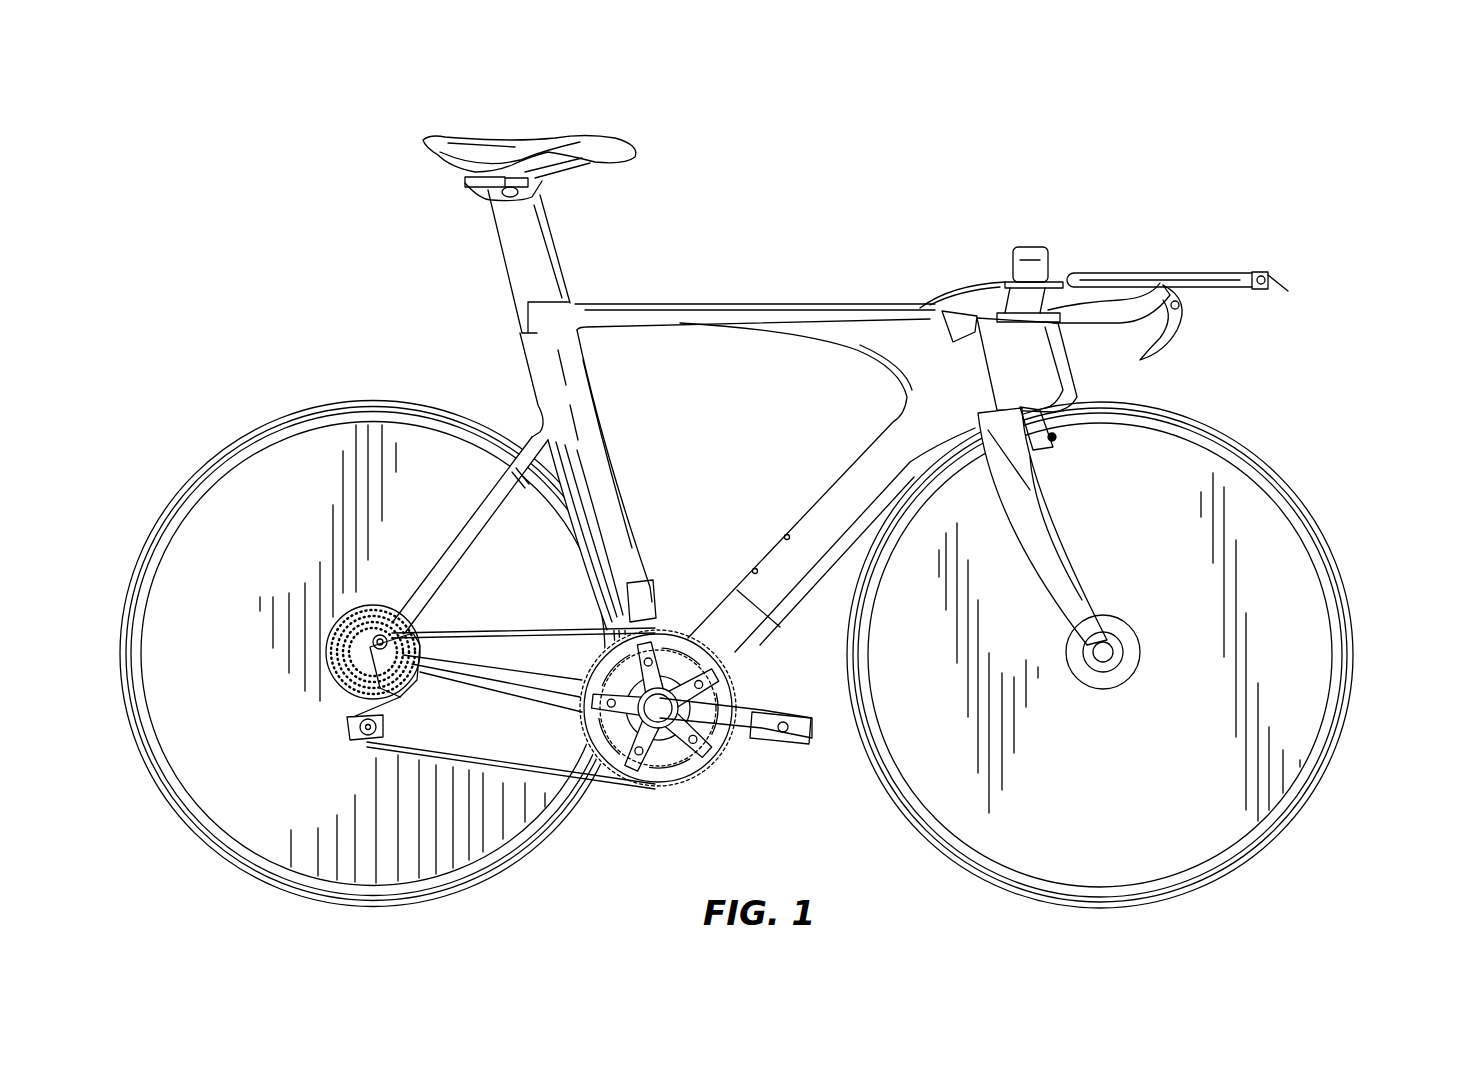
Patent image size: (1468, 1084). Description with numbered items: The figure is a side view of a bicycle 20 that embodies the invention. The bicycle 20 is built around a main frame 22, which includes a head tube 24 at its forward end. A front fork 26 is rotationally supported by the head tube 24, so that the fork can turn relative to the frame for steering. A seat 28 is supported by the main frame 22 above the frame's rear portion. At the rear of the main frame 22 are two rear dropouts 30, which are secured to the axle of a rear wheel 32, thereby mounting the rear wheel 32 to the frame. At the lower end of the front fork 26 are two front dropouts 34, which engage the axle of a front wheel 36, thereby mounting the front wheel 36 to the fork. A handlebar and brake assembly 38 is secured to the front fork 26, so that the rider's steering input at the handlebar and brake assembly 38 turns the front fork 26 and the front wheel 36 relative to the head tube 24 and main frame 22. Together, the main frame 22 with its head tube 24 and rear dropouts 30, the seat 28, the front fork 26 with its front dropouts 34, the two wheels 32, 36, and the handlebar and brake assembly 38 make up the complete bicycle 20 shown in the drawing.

The bicycle 20 is at (845, 228).
The main frame 22 is at (665, 318).
The head tube 24 is at (973, 373).
The front fork 26 is at (1043, 520).
The seat 28 is at (497, 153).
The rear dropouts 30 is at (373, 633).
The rear wheel 32 is at (207, 464).
The front dropouts 34 is at (1112, 640).
The front wheel 36 is at (1345, 575).
The handlebar and brake assembly 38 is at (1143, 249).